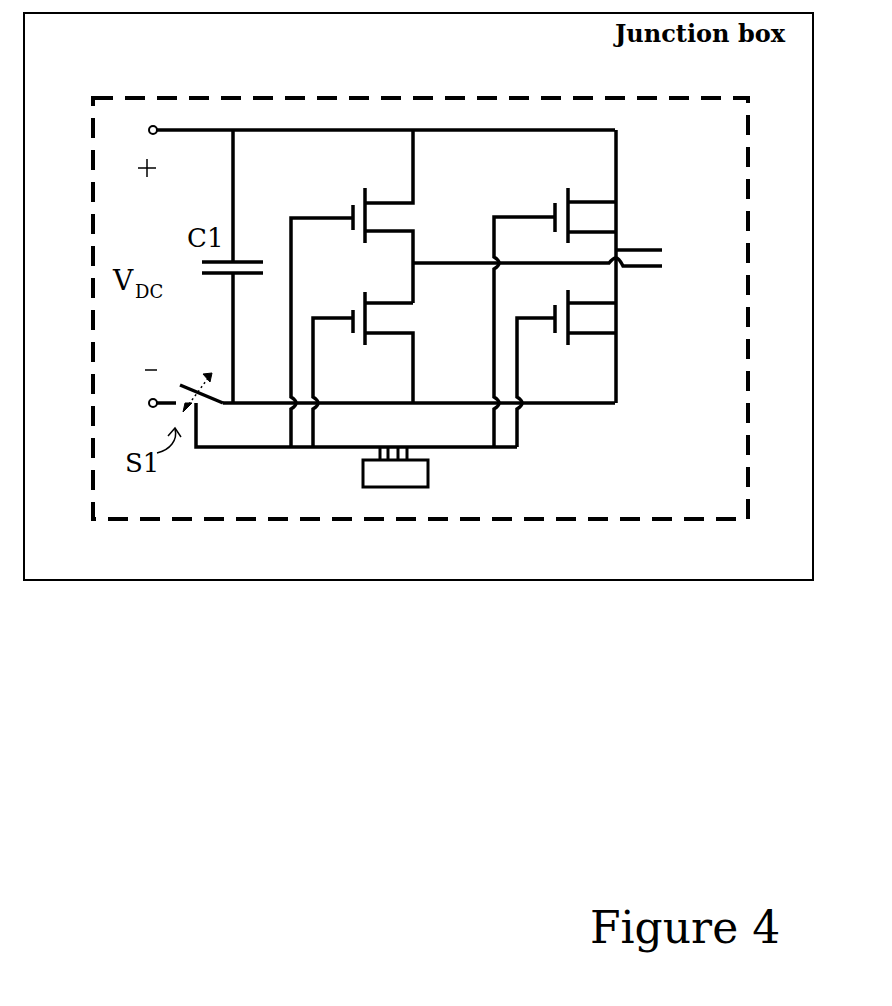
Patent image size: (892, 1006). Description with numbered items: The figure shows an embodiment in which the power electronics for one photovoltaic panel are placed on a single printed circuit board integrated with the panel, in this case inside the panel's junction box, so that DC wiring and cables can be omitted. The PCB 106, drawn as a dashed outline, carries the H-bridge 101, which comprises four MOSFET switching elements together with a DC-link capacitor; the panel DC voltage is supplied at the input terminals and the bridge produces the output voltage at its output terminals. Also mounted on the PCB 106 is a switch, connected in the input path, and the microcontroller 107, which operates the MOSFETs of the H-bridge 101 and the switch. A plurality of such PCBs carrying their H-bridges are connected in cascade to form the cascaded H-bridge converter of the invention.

The PCB 106 is at (268, 88).
The H-bridge 101 is at (472, 127).
The microcontroller 107 is at (407, 498).